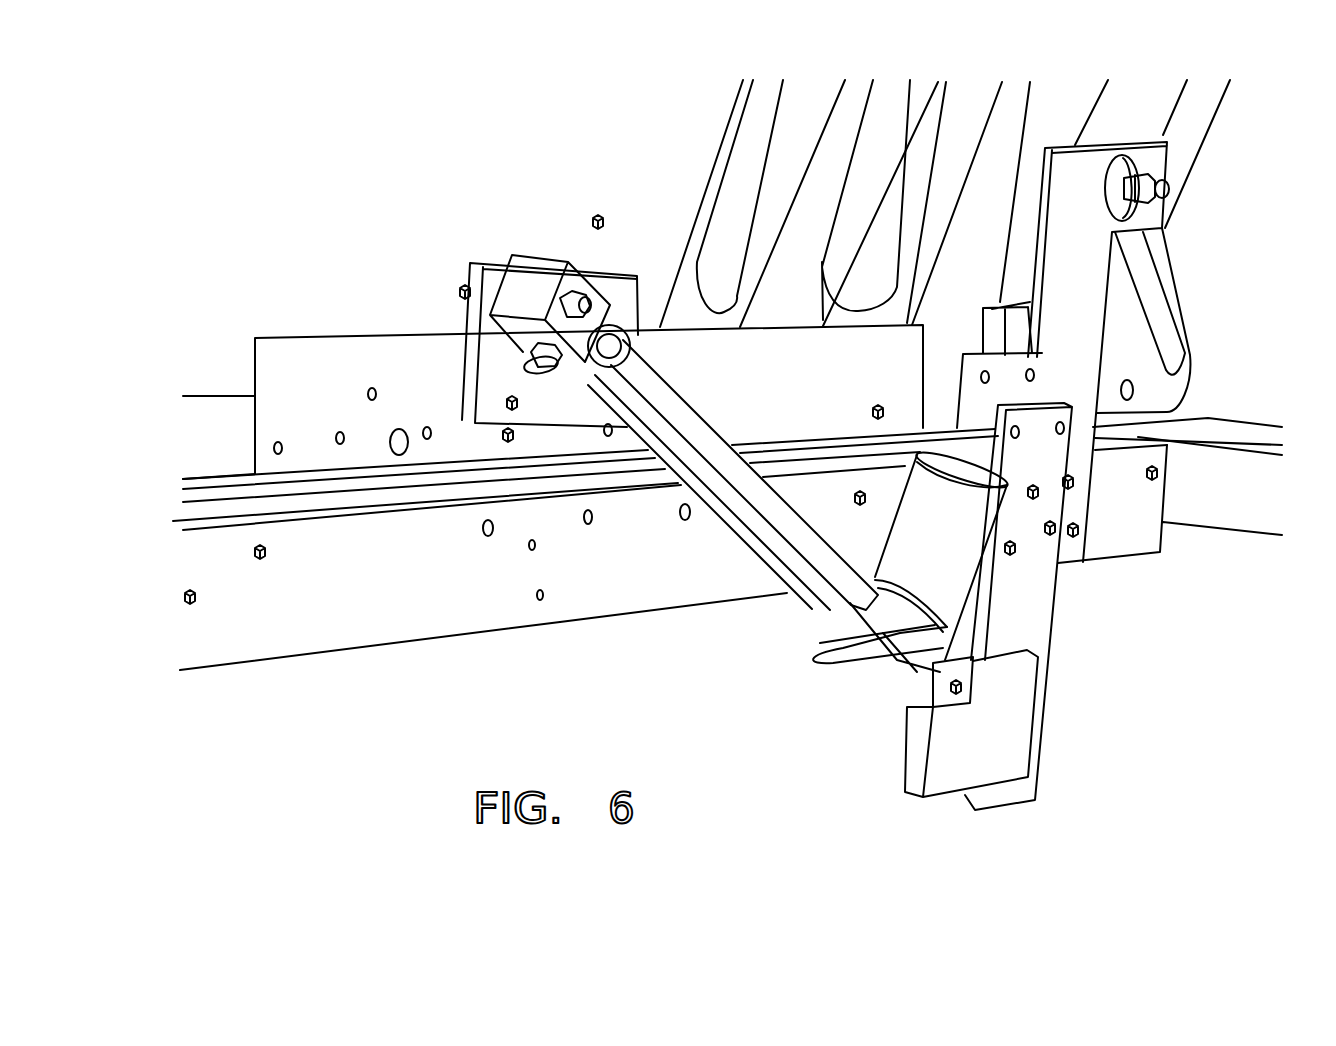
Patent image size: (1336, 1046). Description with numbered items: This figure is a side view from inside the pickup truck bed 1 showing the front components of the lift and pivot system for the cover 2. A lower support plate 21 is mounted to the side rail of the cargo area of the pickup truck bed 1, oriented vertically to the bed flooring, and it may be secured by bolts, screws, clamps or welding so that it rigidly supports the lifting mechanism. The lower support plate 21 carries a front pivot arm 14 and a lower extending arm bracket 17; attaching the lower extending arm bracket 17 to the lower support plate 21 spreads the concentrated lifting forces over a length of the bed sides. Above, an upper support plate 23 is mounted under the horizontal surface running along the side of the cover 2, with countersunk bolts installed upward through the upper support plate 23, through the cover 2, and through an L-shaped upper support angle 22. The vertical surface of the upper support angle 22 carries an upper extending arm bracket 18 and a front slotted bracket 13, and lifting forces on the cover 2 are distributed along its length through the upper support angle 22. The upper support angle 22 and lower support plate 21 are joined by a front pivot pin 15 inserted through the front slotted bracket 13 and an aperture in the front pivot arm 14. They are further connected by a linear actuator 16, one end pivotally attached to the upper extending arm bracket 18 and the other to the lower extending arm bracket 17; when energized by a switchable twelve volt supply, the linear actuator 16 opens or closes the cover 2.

The pickup truck bed 1 is at (363, 757).
The cover 2 is at (288, 475).
The front slotted bracket 13 is at (1142, 328).
The front pivot arm 14 is at (1052, 158).
The front pivot pin 15 is at (1170, 188).
The linear actuator 16 is at (803, 543).
The lower extending arm bracket 17 is at (993, 723).
The upper extending arm bracket 18 is at (557, 403).
The lower support plate 21 is at (447, 600).
The upper support angle 22 is at (232, 415).
The upper support plate 23 is at (263, 490).